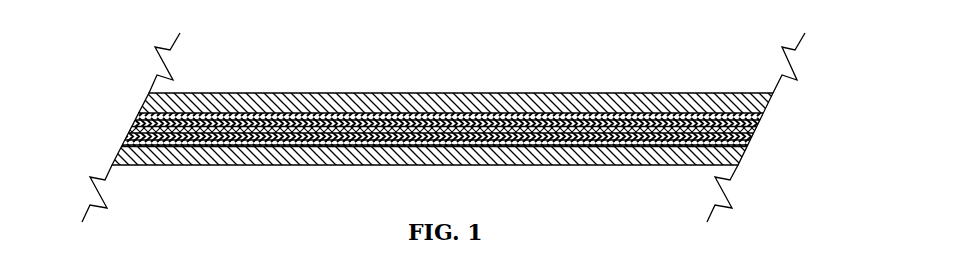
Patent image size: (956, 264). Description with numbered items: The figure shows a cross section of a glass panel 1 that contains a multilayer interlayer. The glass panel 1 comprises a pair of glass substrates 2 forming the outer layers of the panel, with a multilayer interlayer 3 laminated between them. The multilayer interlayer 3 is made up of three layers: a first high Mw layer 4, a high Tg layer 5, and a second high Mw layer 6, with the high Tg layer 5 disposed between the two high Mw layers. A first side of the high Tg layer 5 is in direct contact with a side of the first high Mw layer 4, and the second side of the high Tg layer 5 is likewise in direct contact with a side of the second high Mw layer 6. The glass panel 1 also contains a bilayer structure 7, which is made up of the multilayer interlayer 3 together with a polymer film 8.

The glass panel 1 is at (276, 62).
The glass substrates 2 is at (348, 108).
The multilayer interlayer 3 is at (135, 115).
The first high Mw layer 4 is at (408, 117).
The high Tg layer 5 is at (332, 145).
The second high Mw layer 6 is at (475, 120).
The bilayer structure 7 is at (755, 142).
The polymer film 8 is at (400, 145).